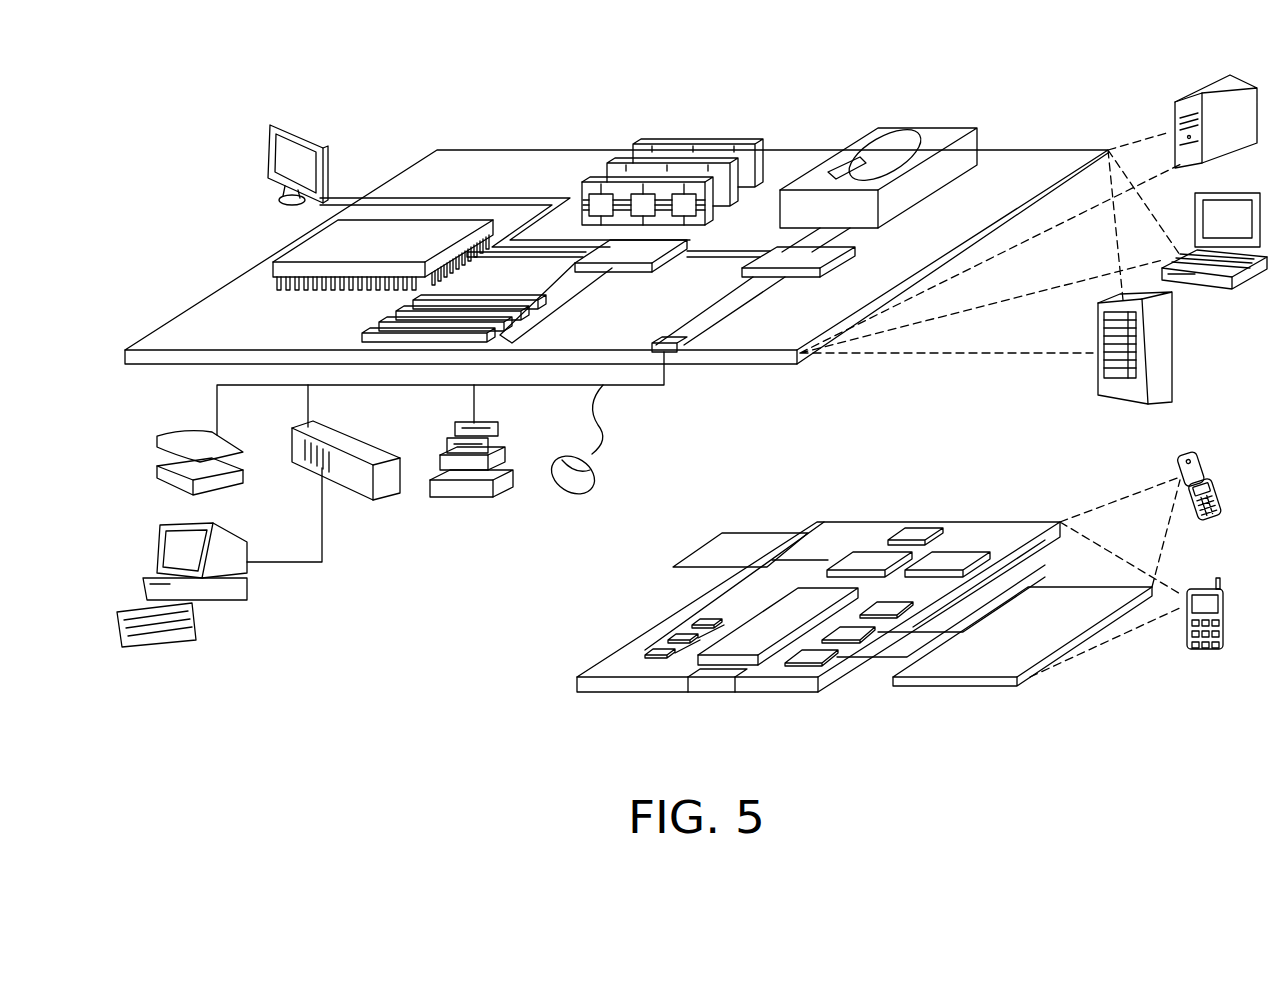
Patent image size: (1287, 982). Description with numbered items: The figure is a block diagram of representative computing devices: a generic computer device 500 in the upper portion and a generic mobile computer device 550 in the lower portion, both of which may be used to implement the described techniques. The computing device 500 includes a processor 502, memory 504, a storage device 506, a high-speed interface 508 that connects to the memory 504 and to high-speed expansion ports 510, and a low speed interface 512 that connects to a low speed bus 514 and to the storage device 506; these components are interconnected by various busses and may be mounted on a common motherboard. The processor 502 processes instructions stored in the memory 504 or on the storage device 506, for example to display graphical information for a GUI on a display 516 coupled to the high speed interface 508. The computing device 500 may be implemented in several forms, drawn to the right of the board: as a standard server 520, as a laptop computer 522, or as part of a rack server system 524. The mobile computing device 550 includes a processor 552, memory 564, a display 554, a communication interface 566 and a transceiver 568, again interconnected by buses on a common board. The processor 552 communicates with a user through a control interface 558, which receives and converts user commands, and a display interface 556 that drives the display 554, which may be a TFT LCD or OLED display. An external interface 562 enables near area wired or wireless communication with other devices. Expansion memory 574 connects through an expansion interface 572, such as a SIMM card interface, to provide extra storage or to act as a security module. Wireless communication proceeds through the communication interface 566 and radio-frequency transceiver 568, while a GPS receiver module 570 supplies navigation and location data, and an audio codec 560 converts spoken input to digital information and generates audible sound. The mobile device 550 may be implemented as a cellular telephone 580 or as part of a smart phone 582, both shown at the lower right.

The generic computer device 500 is at (388, 98).
The processor 502 is at (293, 248).
The memory 504 is at (705, 142).
The storage device 506 is at (917, 127).
The high-speed interface 508 is at (643, 247).
The high-speed expansion ports 510 is at (384, 320).
The low speed interface 512 is at (774, 255).
The low speed bus 514 is at (671, 338).
The display 516 is at (277, 122).
The standard server 520 is at (1195, 101).
The laptop computer 522 is at (1245, 194).
The rack server system 524 is at (1172, 355).
The generic mobile computer device 550 is at (533, 703).
The processor 552 is at (749, 634).
The display 554 is at (1059, 602).
The display interface 556 is at (827, 652).
The control interface 558 is at (857, 630).
The audio codec 560 is at (890, 600).
The external interface 562 is at (712, 678).
The memory 564 is at (670, 637).
The communication interface 566 is at (870, 552).
The transceiver 568 is at (955, 552).
The GPS receiver module 570 is at (917, 532).
The expansion interface 572 is at (800, 532).
The expansion memory 574 is at (724, 532).
The cellular telephone 580 is at (1193, 455).
The smart phone 582 is at (1201, 584).